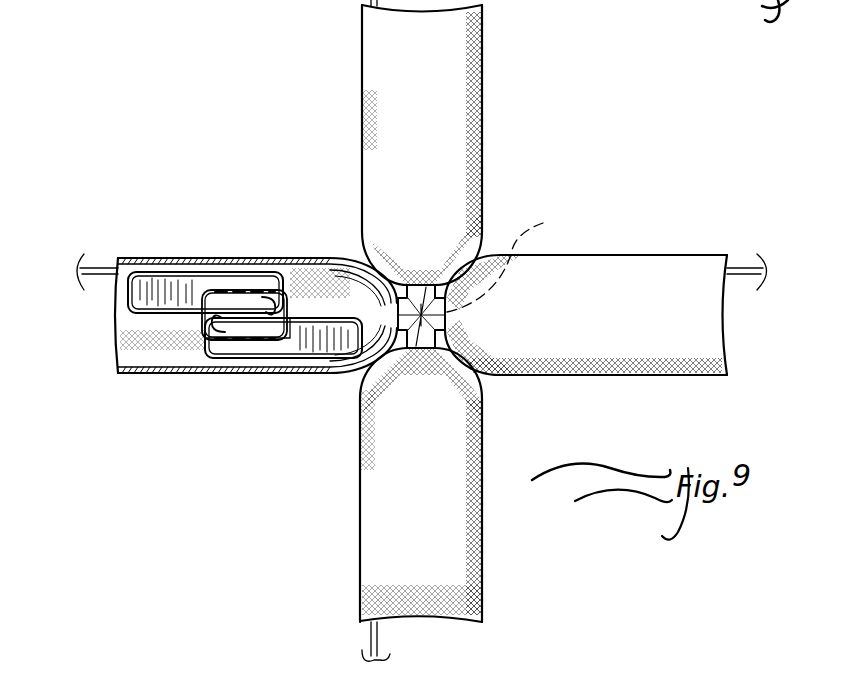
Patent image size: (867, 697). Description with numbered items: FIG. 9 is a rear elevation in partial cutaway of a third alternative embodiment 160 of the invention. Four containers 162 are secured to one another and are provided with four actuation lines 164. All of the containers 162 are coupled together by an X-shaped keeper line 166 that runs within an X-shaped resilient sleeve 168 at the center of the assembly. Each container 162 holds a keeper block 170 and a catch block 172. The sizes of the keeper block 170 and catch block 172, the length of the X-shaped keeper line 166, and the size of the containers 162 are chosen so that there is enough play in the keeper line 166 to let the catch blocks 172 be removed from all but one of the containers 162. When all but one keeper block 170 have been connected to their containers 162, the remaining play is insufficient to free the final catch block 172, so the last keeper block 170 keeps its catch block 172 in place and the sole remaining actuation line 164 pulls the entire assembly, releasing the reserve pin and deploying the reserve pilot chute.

The third alternative embodiment 160 is at (280, 148).
The container 162 is at (362, 190).
The actuation line 164 is at (306, 4).
The X-shaped keeper line 166 is at (532, 226).
The X-shaped resilient sleeve 168 is at (422, 300).
The keeper block 170 is at (243, 283).
The catch block 172 is at (282, 348).